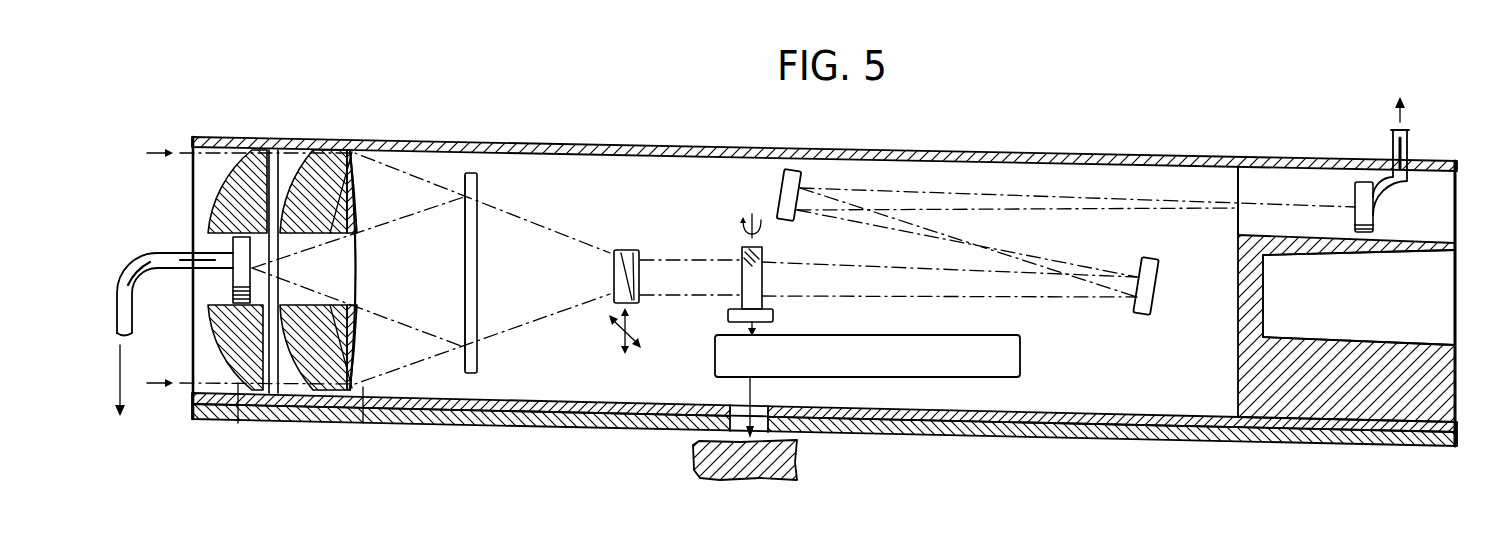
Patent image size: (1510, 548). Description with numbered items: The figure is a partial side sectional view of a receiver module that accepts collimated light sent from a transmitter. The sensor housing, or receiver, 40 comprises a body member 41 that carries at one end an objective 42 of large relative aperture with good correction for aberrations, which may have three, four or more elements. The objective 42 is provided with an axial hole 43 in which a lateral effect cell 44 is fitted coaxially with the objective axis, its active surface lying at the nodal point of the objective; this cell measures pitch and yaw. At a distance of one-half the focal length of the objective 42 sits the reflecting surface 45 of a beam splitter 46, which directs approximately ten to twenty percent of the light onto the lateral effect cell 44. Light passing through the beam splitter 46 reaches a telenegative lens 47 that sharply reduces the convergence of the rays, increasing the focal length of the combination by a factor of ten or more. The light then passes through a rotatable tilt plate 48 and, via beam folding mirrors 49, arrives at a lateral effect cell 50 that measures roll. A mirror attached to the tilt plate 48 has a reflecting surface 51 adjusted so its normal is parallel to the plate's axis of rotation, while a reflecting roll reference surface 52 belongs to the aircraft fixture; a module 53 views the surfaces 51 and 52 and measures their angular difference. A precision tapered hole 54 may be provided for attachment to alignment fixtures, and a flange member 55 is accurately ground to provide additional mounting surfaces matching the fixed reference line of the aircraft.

The sensor housing 40 is at (946, 142).
The body member 41 is at (1091, 160).
The objective 42 is at (240, 423).
The axial hole 43 is at (207, 237).
The lateral effect cell 44 is at (252, 296).
The reflecting surface 45 is at (463, 188).
The beam splitter 46 is at (471, 173).
The telenegative lens 47 is at (614, 252).
The rotatable tilt plate 48 is at (742, 249).
The beam folding mirrors 49 is at (800, 178).
The lateral effect cell 50 is at (1356, 186).
The reflecting surface 51 is at (728, 314).
The reflecting roll reference surface 52 is at (697, 445).
The module 53 is at (878, 380).
The precision tapered hole 54 is at (1393, 340).
The flange member 55 is at (573, 423).